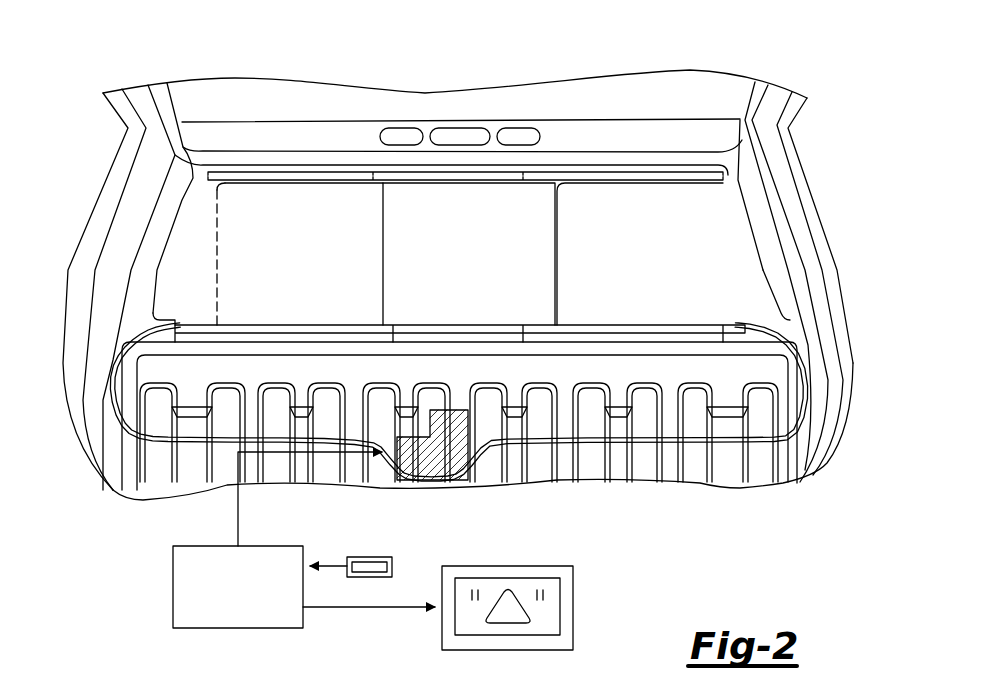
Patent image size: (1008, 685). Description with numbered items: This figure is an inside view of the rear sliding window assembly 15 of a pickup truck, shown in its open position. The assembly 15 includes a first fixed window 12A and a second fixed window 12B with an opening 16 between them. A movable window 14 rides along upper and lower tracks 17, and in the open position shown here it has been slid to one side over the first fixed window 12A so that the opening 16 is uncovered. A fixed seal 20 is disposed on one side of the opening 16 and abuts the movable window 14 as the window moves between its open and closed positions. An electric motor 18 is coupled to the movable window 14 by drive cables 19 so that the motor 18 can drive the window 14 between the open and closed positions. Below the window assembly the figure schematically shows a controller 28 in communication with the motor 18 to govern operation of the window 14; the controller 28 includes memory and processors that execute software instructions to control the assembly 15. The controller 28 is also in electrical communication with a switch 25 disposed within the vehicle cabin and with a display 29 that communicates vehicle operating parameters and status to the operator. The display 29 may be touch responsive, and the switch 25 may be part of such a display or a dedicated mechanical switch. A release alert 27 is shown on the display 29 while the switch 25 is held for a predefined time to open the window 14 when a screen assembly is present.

The first fixed window 12A is at (192, 232).
The second fixed window 12B is at (700, 262).
The movable window 14 is at (298, 210).
The sliding window assembly 15 is at (754, 46).
The opening 16 is at (469, 205).
The upper and lower tracks 17 is at (712, 171).
The electric motor 18 is at (421, 458).
The drive cables 19 is at (130, 433).
The fixed seal 20 is at (563, 220).
The switch 25 is at (369, 557).
The release alert 27 is at (520, 608).
The controller 28 is at (173, 587).
The display 29 is at (540, 566).